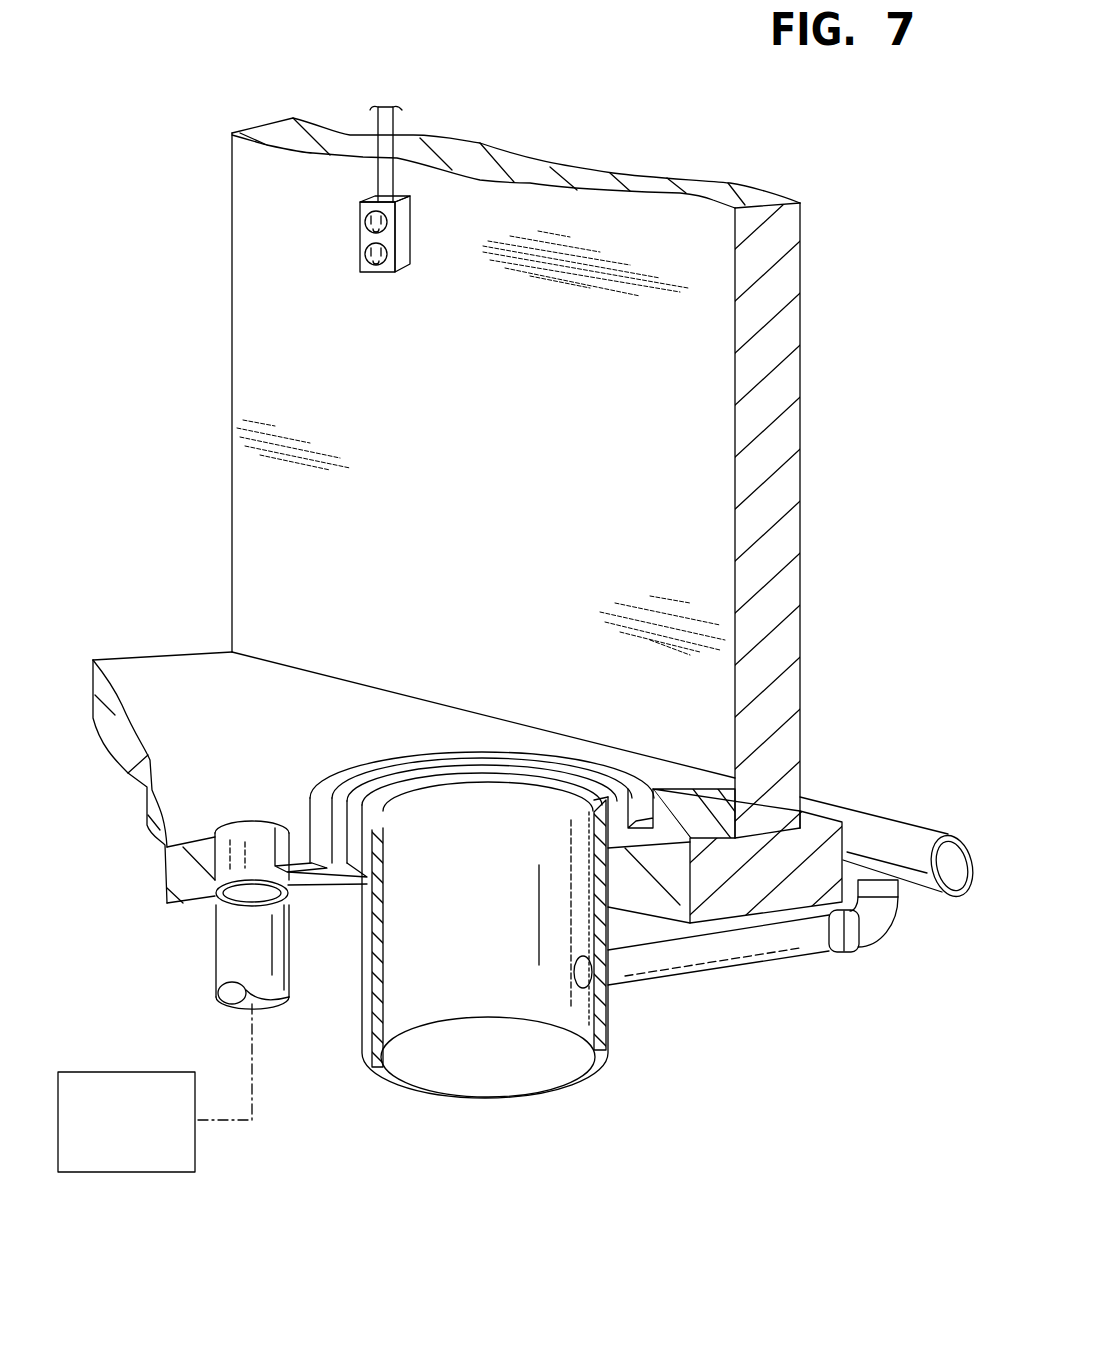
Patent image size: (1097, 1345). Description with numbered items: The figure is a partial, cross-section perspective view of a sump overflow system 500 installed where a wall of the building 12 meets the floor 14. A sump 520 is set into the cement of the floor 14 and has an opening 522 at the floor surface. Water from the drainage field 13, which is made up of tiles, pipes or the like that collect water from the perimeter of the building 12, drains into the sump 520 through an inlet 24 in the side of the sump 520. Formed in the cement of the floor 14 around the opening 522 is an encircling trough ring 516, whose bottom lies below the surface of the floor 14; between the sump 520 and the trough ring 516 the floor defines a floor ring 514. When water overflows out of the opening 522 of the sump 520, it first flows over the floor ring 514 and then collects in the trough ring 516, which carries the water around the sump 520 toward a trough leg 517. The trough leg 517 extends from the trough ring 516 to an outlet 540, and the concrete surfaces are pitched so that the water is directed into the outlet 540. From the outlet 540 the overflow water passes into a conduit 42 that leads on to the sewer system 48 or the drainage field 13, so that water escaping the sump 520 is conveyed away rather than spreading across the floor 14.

The building 12 is at (484, 493).
The floor 14 is at (209, 704).
The sump overflow system 500 is at (530, 622).
The floor ring 514 is at (342, 800).
The sump 520 is at (455, 752).
The opening 522 is at (488, 799).
The trough ring 516 is at (638, 818).
The trough leg 517 is at (300, 860).
The drainage field 13 is at (900, 835).
The inlet 24 is at (576, 970).
The outlet 540 is at (243, 840).
The conduit 42 is at (237, 950).
The sewer system 48 is at (139, 1134).